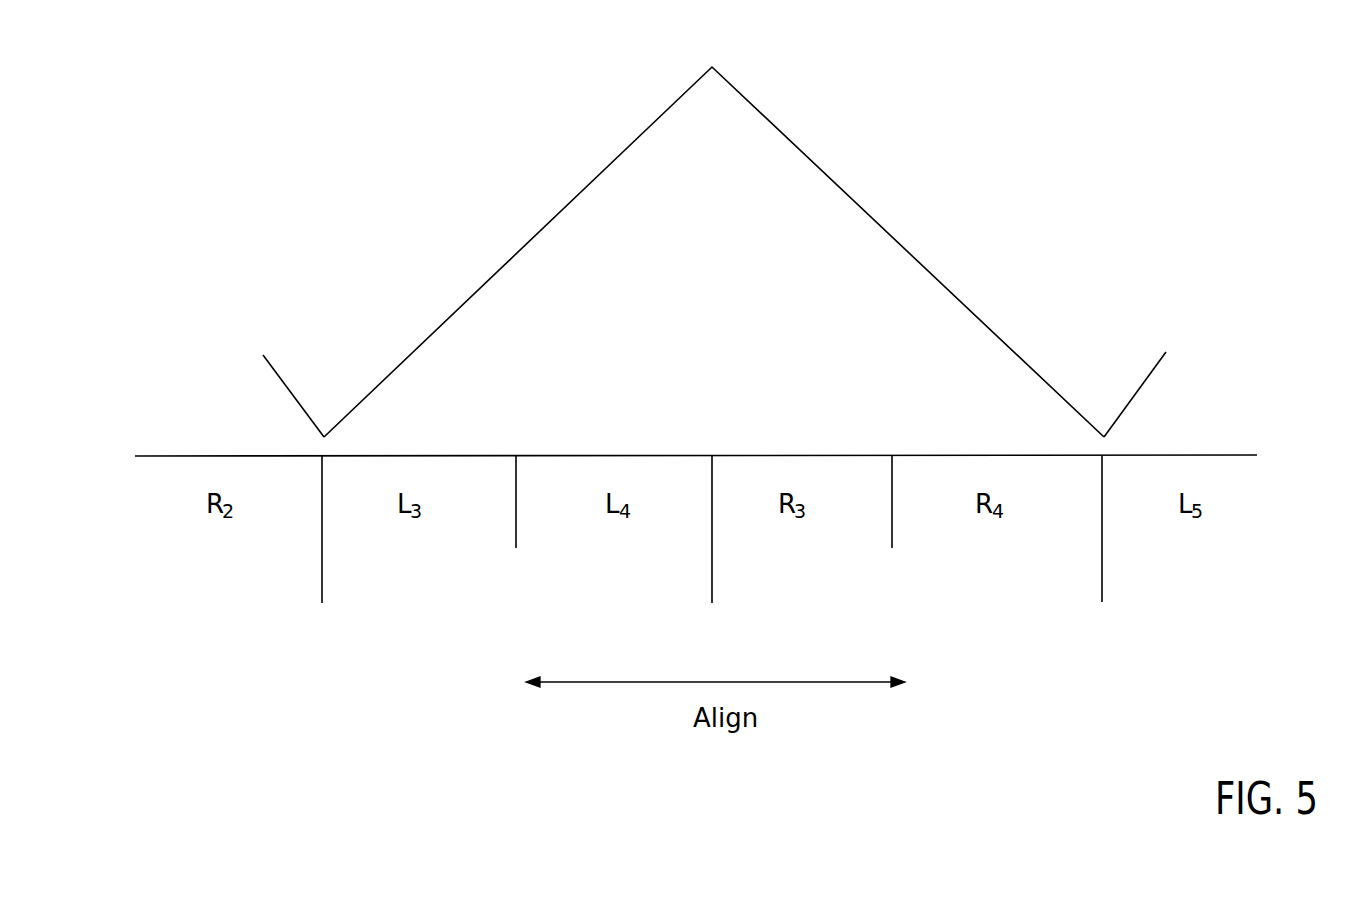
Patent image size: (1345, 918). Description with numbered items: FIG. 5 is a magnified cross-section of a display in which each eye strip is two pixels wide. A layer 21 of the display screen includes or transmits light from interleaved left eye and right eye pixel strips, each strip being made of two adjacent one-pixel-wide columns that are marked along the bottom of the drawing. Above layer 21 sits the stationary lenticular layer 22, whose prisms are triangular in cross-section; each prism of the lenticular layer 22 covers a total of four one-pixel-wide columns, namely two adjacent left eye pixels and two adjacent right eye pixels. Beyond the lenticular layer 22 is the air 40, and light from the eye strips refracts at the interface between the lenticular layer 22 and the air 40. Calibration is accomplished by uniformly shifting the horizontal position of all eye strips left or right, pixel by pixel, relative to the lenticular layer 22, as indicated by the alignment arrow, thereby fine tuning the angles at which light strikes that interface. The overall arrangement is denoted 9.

The alignment structure 9 is at (714, 247).
The lenticular layer 22 is at (850, 194).
The air 40 is at (1066, 259).
The layer of the display screen 21 is at (1217, 418).